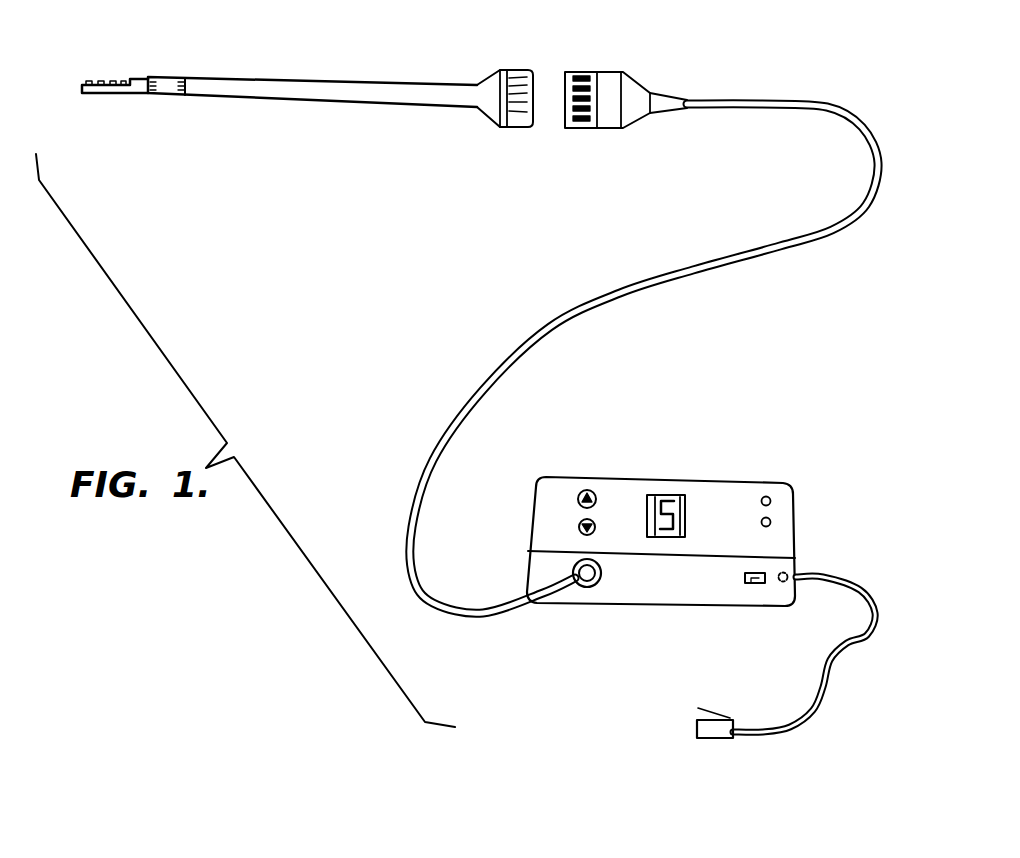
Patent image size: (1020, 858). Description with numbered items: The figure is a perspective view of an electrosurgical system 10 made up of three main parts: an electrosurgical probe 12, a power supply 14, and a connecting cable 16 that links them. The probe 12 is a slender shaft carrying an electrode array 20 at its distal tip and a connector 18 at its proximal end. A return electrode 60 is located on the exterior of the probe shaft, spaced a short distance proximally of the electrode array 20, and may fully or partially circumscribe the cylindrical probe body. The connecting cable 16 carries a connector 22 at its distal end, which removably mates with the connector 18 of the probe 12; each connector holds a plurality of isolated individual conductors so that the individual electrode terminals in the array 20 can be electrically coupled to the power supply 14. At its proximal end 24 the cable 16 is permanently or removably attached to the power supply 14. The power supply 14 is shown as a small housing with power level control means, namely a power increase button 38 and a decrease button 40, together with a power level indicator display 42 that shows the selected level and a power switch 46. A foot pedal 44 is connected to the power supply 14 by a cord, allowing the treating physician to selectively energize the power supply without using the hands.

The electrosurgical system 10 is at (828, 46).
The electrosurgical probe 12 is at (295, 104).
The power supply 14 is at (797, 471).
The connecting cable 16 is at (620, 299).
The connector 18 is at (491, 124).
The electrode array 20 is at (92, 63).
The connector 22 is at (608, 126).
The proximal end 24 is at (582, 588).
The power increase button 38 is at (578, 497).
The decrease button 40 is at (579, 527).
The power level indicator display 42 is at (660, 494).
The foot pedal 44 is at (718, 740).
The power switch 46 is at (750, 585).
The return electrode 60 is at (162, 96).